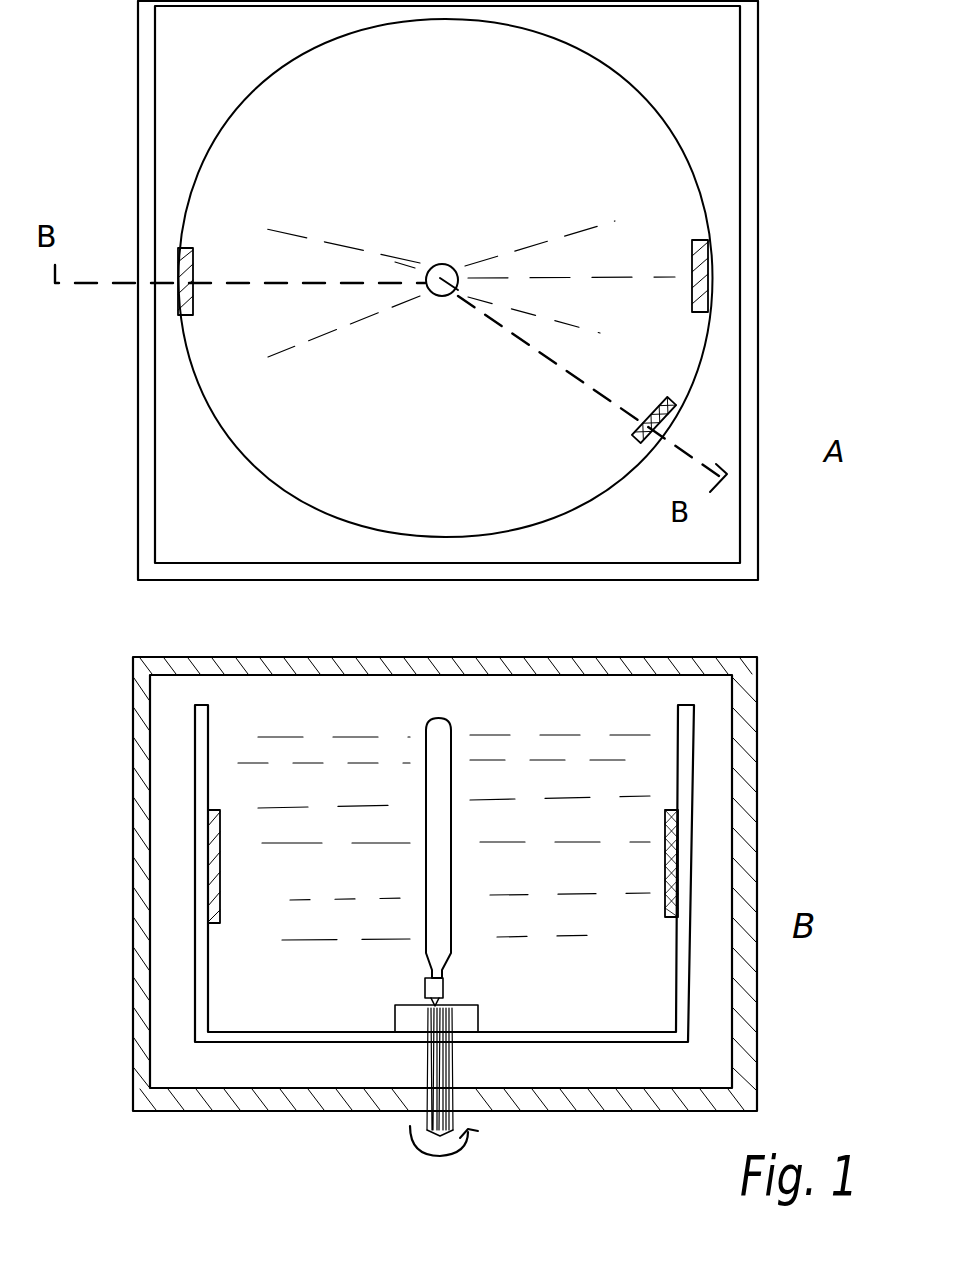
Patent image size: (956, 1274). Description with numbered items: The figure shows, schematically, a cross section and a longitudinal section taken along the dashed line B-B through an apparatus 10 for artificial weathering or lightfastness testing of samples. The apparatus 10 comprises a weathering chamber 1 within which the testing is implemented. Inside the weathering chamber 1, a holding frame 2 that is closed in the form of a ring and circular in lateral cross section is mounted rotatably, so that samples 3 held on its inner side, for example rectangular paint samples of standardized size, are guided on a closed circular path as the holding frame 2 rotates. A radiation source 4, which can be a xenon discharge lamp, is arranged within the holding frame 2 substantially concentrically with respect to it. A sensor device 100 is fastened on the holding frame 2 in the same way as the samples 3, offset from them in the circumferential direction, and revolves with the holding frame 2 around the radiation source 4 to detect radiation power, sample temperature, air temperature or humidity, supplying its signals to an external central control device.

In FIG. 1A, the apparatus 10 is at (76, 61).
In FIG. 1B, the apparatus 10 is at (76, 694).
In FIG. 1A, the weathering chamber 1 is at (138, 406).
In FIG. 1B, the weathering chamber 1 is at (133, 797).
In FIG. 1A, the holding frame 2 is at (645, 110).
In FIG. 1B, the holding frame 2 is at (678, 745).
In FIG. 1A, the samples 3 is at (194, 253).
In FIG. 1B, the samples 3 is at (221, 898).
In FIG. 1A, the radiation source 4 is at (436, 265).
In FIG. 1B, the radiation source 4 is at (451, 776).
In FIG. 1A, the sensor device 100 is at (651, 412).
In FIG. 1B, the sensor device 100 is at (665, 838).